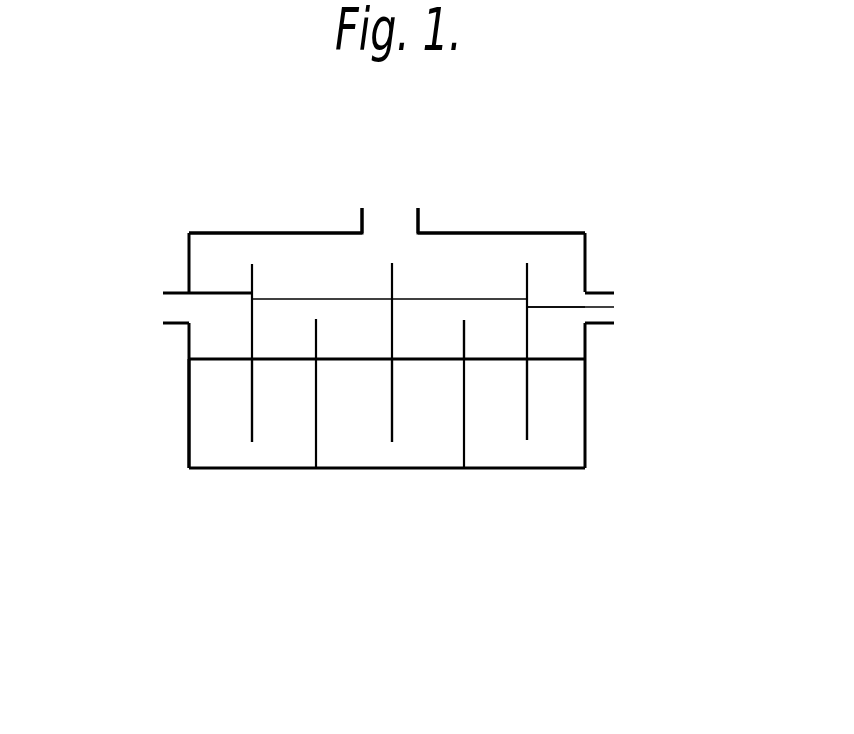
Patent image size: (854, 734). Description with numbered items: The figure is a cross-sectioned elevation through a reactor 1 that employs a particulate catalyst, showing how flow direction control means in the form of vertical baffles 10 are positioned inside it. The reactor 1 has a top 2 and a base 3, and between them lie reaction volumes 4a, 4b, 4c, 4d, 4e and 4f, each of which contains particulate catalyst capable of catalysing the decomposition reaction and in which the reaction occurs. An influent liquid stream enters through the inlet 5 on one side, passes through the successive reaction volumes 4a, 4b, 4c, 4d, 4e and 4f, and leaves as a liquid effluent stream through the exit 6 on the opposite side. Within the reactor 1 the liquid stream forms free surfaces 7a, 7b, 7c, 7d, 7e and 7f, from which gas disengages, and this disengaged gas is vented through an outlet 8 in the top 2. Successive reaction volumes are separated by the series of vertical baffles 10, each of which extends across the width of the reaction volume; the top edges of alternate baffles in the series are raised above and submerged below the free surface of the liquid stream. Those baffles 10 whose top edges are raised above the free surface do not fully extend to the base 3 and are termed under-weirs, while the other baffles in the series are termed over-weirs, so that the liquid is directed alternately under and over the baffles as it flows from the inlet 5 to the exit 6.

The reactor 1 is at (283, 232).
The top 2 is at (202, 232).
The base 3 is at (395, 472).
The reaction volume 4a is at (225, 385).
The reaction volume 4b is at (280, 422).
The reaction volume 4c is at (352, 423).
The reaction volume 4d is at (430, 417).
The reaction volume 4e is at (493, 415).
The reaction volume 4f is at (558, 415).
The influent liquid stream inlet 5 is at (152, 308).
The liquid effluent stream exit 6 is at (652, 307).
The free surface 7a is at (228, 278).
The free surface 7b is at (278, 298).
The free surface 7c is at (350, 292).
The free surface 7d is at (430, 300).
The free surface 7e is at (503, 300).
The free surface 7f is at (552, 307).
The outlet 8 is at (391, 207).
The vertical baffles 10 is at (250, 419).